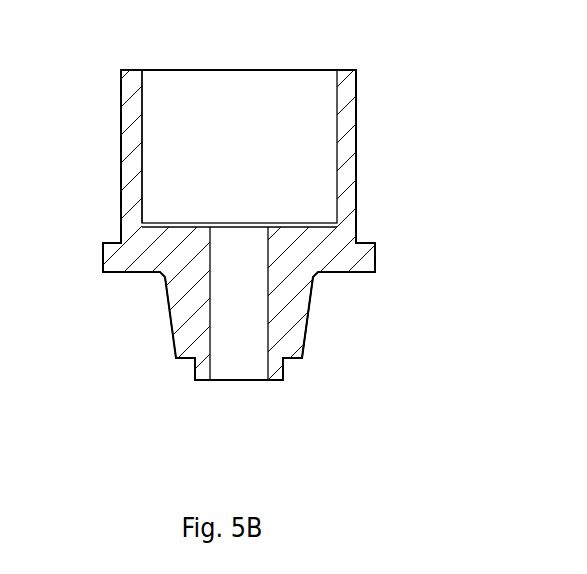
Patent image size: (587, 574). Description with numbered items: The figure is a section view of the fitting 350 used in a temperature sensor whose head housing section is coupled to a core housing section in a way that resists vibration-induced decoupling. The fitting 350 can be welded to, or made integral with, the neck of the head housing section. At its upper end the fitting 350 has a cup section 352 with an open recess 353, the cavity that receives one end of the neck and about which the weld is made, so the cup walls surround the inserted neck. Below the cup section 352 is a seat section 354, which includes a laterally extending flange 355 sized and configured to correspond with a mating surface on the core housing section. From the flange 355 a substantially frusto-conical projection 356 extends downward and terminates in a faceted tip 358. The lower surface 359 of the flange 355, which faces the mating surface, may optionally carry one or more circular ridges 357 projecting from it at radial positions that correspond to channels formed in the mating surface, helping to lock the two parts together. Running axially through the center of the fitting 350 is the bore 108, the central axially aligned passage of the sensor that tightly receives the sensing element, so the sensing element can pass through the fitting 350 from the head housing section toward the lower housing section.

The fitting 350 is at (106, 61).
The cup section 352 is at (117, 127).
The recess 353 is at (267, 89).
The seat section 354 is at (139, 336).
The flange 355 is at (376, 257).
The frusto-conical projection 356 is at (311, 341).
The circular ridges 357 is at (357, 273).
The faceted tip 358 is at (284, 373).
The lower surface of flange 359 is at (106, 274).
The bore 108 is at (235, 367).